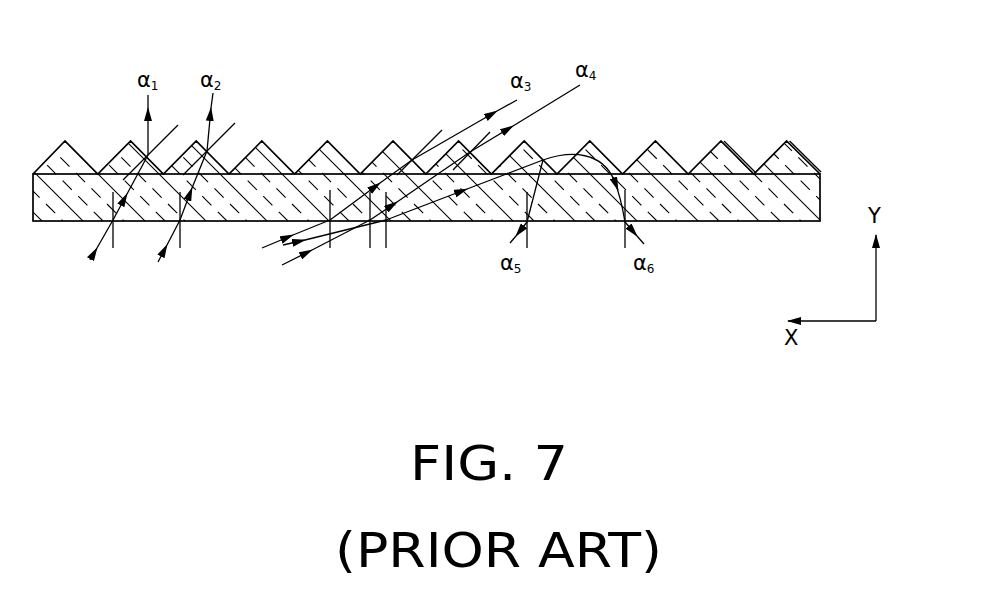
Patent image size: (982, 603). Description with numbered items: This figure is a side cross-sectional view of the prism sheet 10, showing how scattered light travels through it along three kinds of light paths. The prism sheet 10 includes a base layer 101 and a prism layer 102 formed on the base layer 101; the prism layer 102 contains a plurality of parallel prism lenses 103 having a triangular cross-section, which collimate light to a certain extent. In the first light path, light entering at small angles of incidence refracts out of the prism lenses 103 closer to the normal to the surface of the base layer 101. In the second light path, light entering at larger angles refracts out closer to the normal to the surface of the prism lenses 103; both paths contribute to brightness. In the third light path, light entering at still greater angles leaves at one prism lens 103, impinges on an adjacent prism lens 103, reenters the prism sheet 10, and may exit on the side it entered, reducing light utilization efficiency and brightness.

The prism sheet 10 is at (371, 70).
The base layer 101 is at (425, 222).
The prism layer 102 is at (731, 150).
The prism lenses 103 is at (803, 157).